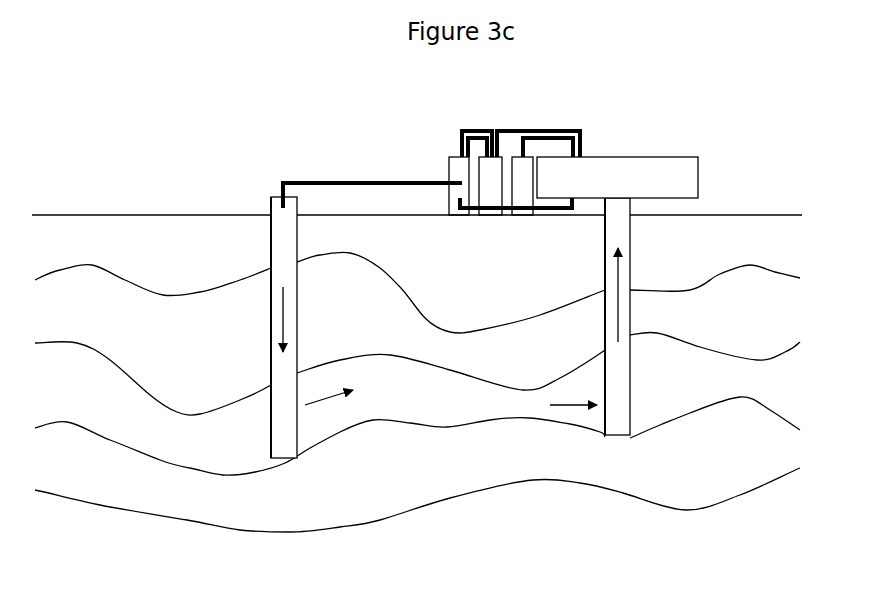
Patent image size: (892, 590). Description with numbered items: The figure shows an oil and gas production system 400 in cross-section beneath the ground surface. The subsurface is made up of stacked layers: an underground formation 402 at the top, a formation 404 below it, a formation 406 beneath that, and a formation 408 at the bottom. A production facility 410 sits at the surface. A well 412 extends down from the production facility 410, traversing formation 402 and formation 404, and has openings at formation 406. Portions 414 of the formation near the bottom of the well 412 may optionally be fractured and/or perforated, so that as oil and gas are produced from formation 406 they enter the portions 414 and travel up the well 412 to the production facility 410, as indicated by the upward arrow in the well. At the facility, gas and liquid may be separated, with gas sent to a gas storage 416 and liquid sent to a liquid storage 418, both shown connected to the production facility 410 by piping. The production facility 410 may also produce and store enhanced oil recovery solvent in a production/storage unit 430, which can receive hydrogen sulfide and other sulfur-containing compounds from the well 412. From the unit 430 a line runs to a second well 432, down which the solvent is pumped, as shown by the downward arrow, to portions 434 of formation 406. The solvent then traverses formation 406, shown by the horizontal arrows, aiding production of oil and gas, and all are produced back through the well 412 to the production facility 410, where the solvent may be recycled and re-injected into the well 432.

The system 400 is at (283, 118).
The underground formation 402 is at (417, 290).
The formation 404 is at (417, 357).
The formation 406 is at (417, 416).
The formation 408 is at (417, 477).
The production facility 410 is at (633, 186).
The well 412 is at (630, 237).
The portions of formation 414 is at (607, 436).
The gas storage 416 is at (521, 172).
The liquid storage 418 is at (494, 171).
The enhanced oil recovery solvent production/storage 430 is at (460, 167).
The well 432 is at (283, 243).
The portions of formation 434 is at (312, 425).